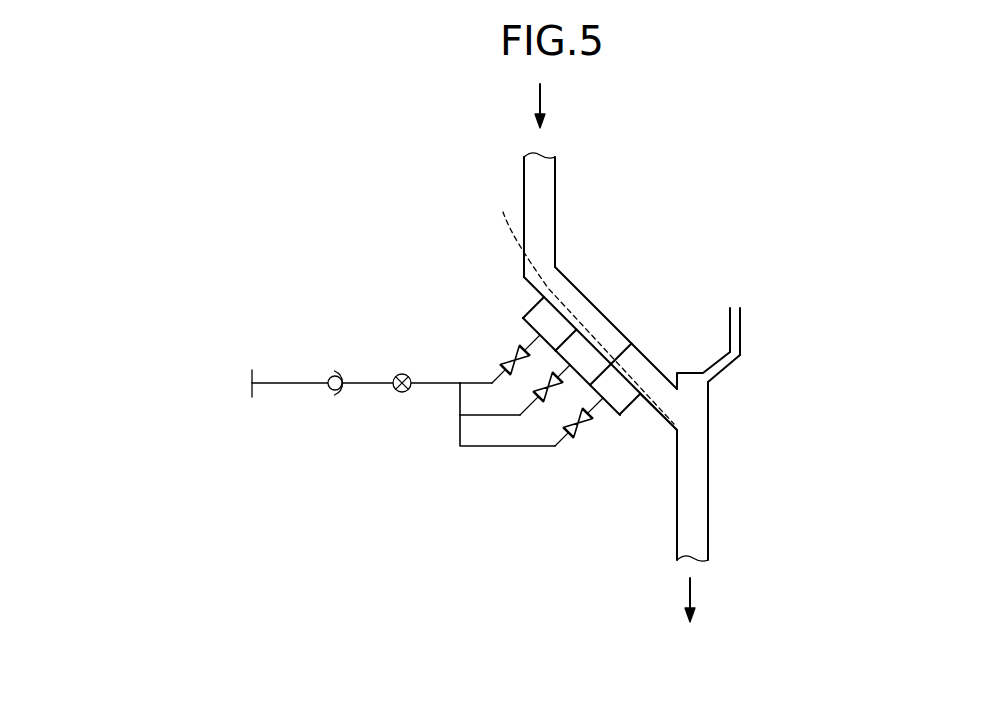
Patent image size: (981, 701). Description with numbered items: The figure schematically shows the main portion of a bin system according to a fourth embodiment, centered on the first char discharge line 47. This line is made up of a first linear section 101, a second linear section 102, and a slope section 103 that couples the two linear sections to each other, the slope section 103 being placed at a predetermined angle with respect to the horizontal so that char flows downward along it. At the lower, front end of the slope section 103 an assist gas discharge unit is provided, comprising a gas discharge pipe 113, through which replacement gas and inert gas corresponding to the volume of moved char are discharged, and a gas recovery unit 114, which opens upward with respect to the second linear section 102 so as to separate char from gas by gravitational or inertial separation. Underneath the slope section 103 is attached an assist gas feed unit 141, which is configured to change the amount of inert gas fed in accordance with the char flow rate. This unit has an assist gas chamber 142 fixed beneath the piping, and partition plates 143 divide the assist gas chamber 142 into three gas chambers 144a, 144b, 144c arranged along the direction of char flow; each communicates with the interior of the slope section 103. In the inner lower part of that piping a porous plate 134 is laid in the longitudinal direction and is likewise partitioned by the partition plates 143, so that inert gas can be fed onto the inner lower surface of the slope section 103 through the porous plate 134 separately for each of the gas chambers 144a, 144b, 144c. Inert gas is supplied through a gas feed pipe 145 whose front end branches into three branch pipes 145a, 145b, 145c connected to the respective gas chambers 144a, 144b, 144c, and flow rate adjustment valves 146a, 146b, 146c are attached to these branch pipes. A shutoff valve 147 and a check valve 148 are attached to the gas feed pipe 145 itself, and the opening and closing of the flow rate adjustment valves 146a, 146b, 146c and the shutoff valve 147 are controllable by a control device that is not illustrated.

The first char discharge line 47 is at (562, 224).
The first linear section 101 is at (553, 168).
The second linear section 102 is at (710, 527).
The slope section 103 is at (684, 360).
The gas discharge pipe 113 is at (743, 330).
The gas recovery unit 114 is at (692, 378).
The porous plate 134 is at (577, 305).
The assist gas feed unit 141 is at (436, 280).
The assist gas chamber 142 is at (652, 420).
The partition plate 143 is at (563, 347).
The gas chamber 144a is at (662, 387).
The gas chamber 144b is at (587, 350).
The gas chamber 144c is at (557, 320).
The gas feed pipe 145 is at (270, 386).
The branch pipe 145a is at (503, 452).
The branch pipe 145b is at (460, 452).
The branch pipe 145c is at (470, 382).
The flow rate adjustment valve 146a is at (569, 440).
The flow rate adjustment valve 146b is at (540, 402).
The flow rate adjustment valve 146c is at (503, 367).
The shutoff valve 147 is at (402, 393).
The check valve 148 is at (328, 391).